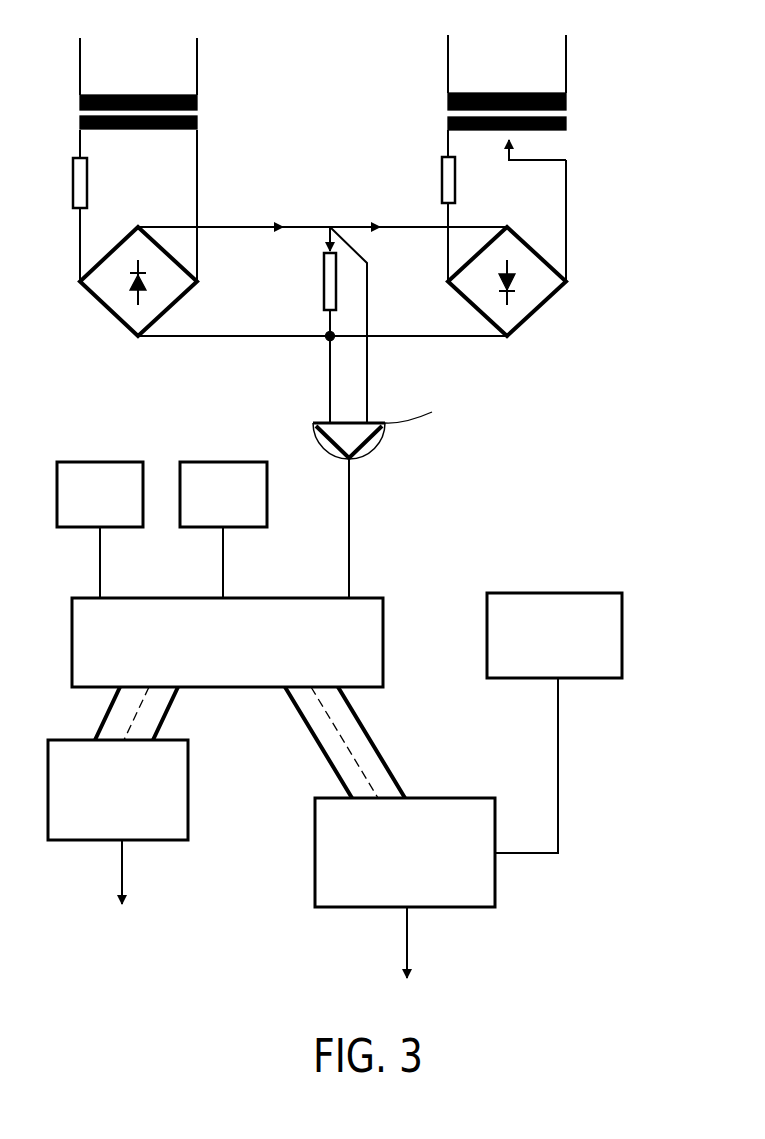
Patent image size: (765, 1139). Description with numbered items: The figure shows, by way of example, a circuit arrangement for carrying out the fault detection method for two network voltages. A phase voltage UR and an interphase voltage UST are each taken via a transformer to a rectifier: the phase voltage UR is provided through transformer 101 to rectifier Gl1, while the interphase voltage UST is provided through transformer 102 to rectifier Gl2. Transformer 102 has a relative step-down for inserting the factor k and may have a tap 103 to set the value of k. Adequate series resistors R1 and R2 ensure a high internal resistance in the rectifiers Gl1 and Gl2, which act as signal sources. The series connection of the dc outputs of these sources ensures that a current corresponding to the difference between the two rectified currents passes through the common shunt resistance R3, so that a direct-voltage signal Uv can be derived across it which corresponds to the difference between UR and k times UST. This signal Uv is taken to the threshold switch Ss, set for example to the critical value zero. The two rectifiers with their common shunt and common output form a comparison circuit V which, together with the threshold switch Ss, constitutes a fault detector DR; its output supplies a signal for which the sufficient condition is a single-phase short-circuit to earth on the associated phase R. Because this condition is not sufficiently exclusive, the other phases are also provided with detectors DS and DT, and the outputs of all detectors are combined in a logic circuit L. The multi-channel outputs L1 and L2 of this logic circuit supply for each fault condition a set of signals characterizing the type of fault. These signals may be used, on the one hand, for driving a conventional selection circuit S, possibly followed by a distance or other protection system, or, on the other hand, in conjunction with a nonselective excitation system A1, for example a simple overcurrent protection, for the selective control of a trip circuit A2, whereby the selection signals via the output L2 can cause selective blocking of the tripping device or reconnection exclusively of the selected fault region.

The transformer 101 is at (199, 112).
The transformer 102 is at (445, 112).
The tap 103 is at (513, 150).
The series resistor R1 is at (73, 177).
The series resistor R2 is at (440, 175).
The common shunt resistance R3 is at (322, 270).
The rectifier Gl1 is at (102, 305).
The rectifier Gl2 is at (530, 315).
The direct-voltage signal Uv is at (334, 379).
The threshold switch Ss is at (383, 443).
The detector DT is at (106, 460).
The detector DS is at (251, 461).
The logic circuit L is at (385, 607).
The multi-channel output L1 is at (167, 713).
The multi-channel output L2 is at (365, 722).
The selection circuit S is at (70, 842).
The nonselective excitation system A1 is at (593, 680).
The trip circuit A2 is at (340, 910).
The fault detector DR is at (641, 470).
The phase voltage UR is at (138, 148).
The interphase voltage UST is at (507, 148).
The comparison circuit V is at (326, 116).